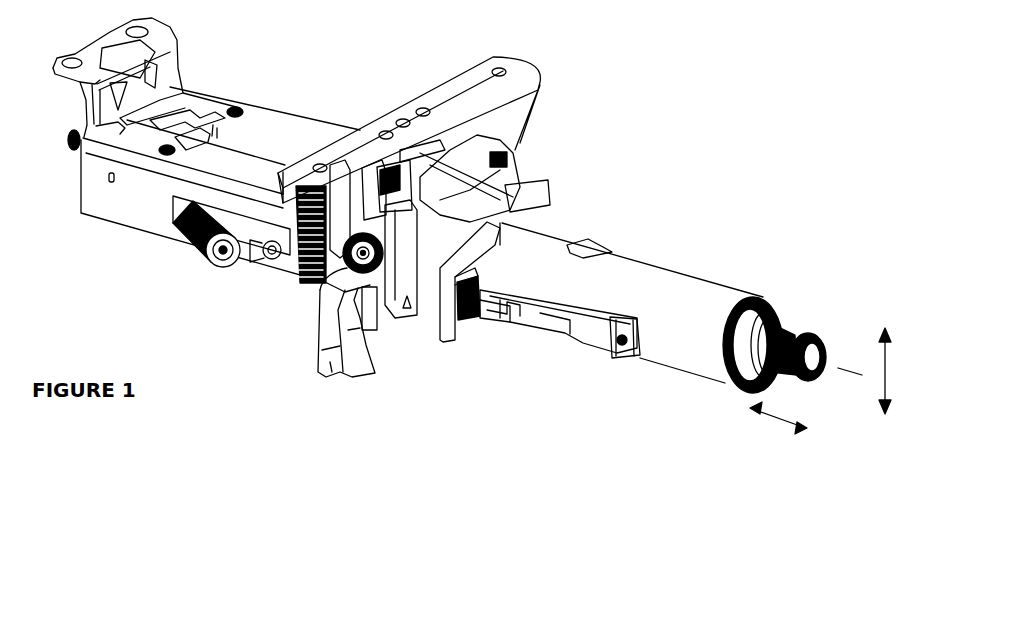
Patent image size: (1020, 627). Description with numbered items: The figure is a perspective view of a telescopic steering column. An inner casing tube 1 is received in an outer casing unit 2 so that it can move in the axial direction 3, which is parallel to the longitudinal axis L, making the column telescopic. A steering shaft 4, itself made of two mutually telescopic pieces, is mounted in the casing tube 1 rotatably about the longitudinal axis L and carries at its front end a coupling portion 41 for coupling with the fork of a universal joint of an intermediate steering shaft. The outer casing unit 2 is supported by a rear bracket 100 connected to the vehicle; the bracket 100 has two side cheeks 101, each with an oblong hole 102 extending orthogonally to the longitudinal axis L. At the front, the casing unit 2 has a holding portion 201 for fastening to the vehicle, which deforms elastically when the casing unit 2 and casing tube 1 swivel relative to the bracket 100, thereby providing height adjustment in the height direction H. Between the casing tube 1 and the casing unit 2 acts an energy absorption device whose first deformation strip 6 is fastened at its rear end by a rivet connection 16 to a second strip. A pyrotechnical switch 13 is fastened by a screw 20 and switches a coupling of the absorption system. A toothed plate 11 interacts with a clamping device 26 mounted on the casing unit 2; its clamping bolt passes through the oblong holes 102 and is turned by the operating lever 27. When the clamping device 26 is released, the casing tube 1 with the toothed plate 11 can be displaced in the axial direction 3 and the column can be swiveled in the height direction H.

The inner casing tube 1 is at (676, 288).
The outer casing unit 2 is at (295, 128).
The axial direction 3 is at (781, 422).
The steering shaft 4 is at (752, 335).
The first deformation strip 6 is at (503, 328).
The toothed plate 11 is at (465, 322).
The pyrotechnical switch 13 is at (222, 268).
The rivet connection 16 is at (623, 346).
The screw 20 is at (270, 268).
The clamping device 26 is at (412, 333).
The operating lever 27 is at (337, 364).
The coupling portion 41 is at (75, 152).
The rear bracket 100 is at (457, 90).
The side cheeks 101 is at (413, 170).
The oblong hole 102 is at (392, 177).
The front holding portion 201 is at (168, 63).
The longitudinal axis L is at (853, 373).
The height direction H is at (880, 383).